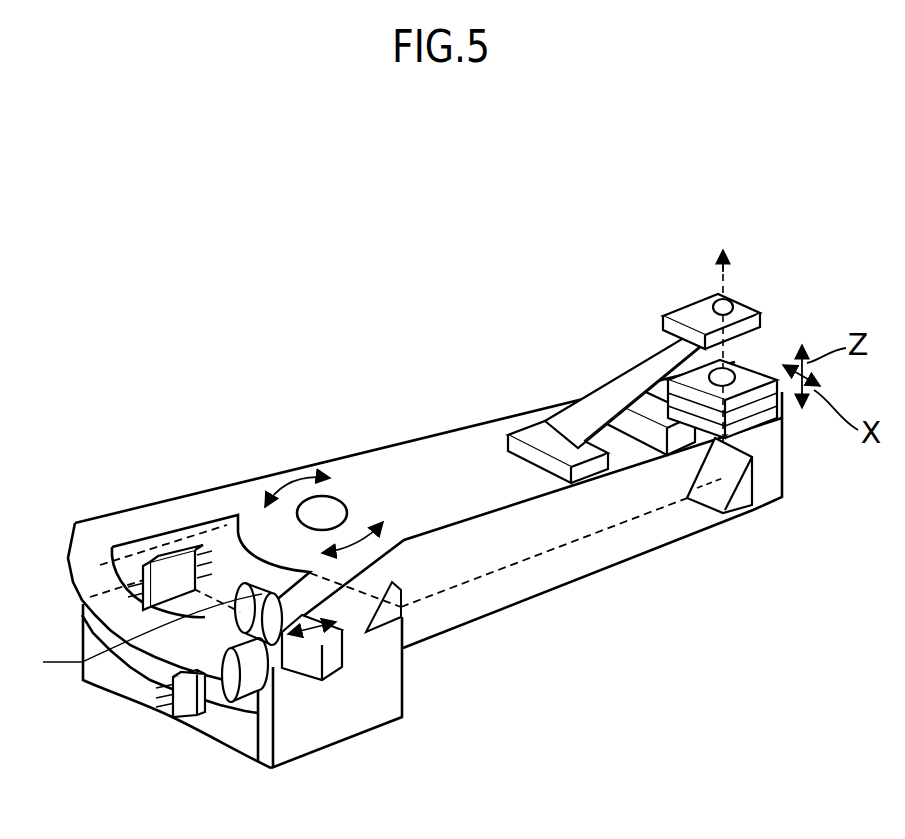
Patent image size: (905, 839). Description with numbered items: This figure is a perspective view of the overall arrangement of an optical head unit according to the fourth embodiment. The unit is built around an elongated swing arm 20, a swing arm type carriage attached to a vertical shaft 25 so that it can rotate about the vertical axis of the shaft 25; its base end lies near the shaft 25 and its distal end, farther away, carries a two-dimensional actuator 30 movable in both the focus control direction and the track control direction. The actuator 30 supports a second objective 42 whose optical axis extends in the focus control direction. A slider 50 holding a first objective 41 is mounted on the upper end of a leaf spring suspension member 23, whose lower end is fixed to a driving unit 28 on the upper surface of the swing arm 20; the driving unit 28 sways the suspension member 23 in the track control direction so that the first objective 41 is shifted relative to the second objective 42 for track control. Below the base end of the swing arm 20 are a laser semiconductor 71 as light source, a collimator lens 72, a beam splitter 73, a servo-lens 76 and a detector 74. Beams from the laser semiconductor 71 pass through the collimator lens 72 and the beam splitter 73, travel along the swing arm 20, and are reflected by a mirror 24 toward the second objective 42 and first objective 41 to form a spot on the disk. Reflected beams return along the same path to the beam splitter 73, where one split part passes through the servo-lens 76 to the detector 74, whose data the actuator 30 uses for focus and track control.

The swing arm 20 is at (437, 432).
The suspension member 23 is at (628, 364).
The mirror 24 is at (725, 497).
The vertical shaft 25 is at (335, 497).
The driving unit 28 is at (525, 433).
The actuator 30 is at (755, 365).
The first objective 41 is at (713, 298).
The second objective 42 is at (733, 373).
The slider 50 is at (745, 306).
The laser semiconductor 71 is at (195, 712).
The collimator lens 72 is at (256, 720).
The beam splitter 73 is at (330, 675).
The detector 74 is at (175, 567).
The servo-lens 76 is at (134, 634).